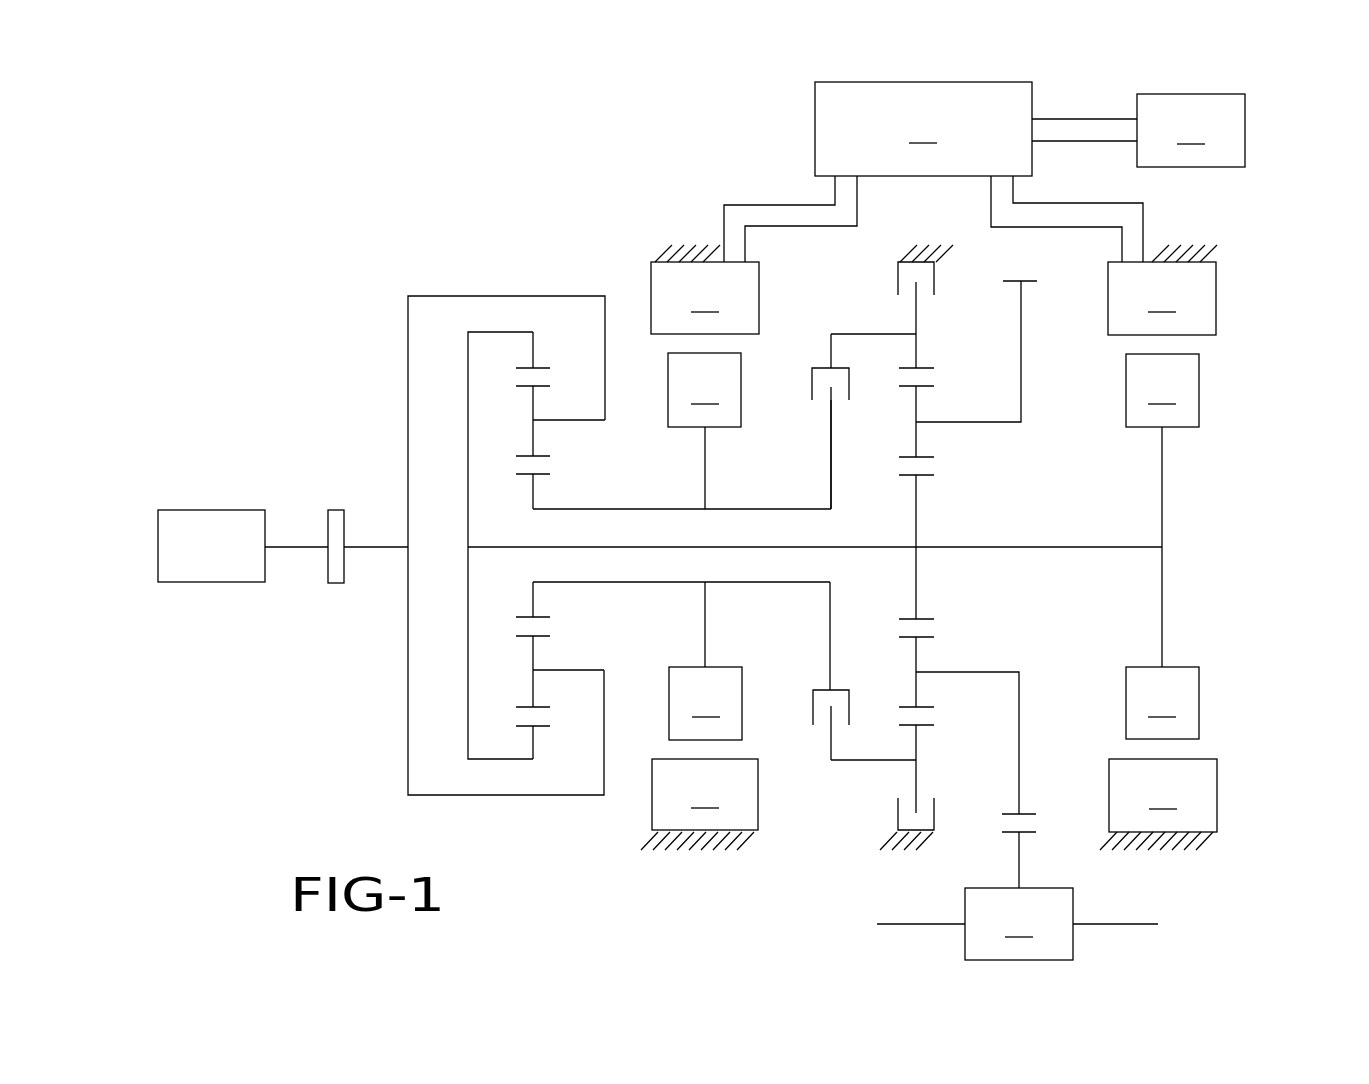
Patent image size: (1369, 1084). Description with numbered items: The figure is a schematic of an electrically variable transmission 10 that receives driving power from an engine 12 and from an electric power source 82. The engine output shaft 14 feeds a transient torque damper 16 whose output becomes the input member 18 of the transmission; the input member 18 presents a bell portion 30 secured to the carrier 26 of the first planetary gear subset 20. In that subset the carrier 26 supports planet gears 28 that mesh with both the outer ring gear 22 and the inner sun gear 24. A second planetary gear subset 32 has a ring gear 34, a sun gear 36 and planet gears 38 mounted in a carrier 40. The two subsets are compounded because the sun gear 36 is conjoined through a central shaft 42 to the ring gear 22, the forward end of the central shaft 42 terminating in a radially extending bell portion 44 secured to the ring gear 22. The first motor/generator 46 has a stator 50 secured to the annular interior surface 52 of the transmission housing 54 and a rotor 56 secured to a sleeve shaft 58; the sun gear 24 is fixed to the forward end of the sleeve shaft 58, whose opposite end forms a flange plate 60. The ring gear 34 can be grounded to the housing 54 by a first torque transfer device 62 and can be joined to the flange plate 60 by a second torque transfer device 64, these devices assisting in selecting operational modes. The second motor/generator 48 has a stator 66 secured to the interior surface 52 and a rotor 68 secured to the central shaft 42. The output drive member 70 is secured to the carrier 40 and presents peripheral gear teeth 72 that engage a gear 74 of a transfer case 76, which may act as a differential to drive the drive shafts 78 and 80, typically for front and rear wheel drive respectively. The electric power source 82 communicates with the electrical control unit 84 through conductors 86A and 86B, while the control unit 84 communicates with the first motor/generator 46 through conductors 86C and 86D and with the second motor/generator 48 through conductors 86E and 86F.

The electrically variable transmission 10 is at (429, 230).
The engine 12 is at (198, 527).
The output shaft 14 is at (302, 547).
The transient torque damper 16 is at (332, 570).
The input member 18 is at (377, 549).
The first planetary gear subset 20 is at (497, 312).
The ring gear 22 is at (548, 368).
The sun gear 24 is at (548, 620).
The carrier 26 is at (578, 422).
The planet gears 28 is at (533, 440).
The bell portion 30 is at (578, 296).
The second planetary gear subset 32 is at (950, 340).
The ring gear 34 is at (934, 369).
The sun gear 36 is at (934, 476).
The planet gears 38 is at (916, 440).
The carrier 40 is at (1021, 424).
The central shaft 42 is at (583, 549).
The bell portion 44 is at (468, 520).
The first motor/generator 46 is at (635, 282).
The second motor/generator 48 is at (1248, 342).
The stator 50 is at (705, 546).
The interior surface 52 is at (700, 263).
The transmission housing 54 is at (690, 243).
The rotor 56 is at (705, 546).
The sleeve shaft 58 is at (750, 508).
The flange plate 60 is at (831, 455).
The torque transfer device 62 is at (898, 285).
The torque transfer device 64 is at (810, 386).
The stator 66 is at (1162, 547).
The rotor 68 is at (1162, 546).
The output drive member 70 is at (1019, 715).
The peripheral gear teeth 72 is at (1010, 815).
The gear 74 is at (1030, 835).
The transfer case 76 is at (1019, 924).
The drive shaft 78 is at (910, 924).
The drive shaft 80 is at (1128, 924).
The electric power source 82 is at (1191, 130).
The electrical control unit 84 is at (923, 129).
The electrical transfer conductor 86A is at (1080, 119).
The electrical transfer conductor 86B is at (1078, 141).
The electrical transfer conductor 86C is at (768, 205).
The electrical transfer conductor 86D is at (790, 226).
The electrical transfer conductor 86E is at (1143, 208).
The electrical transfer conductor 86F is at (1067, 229).